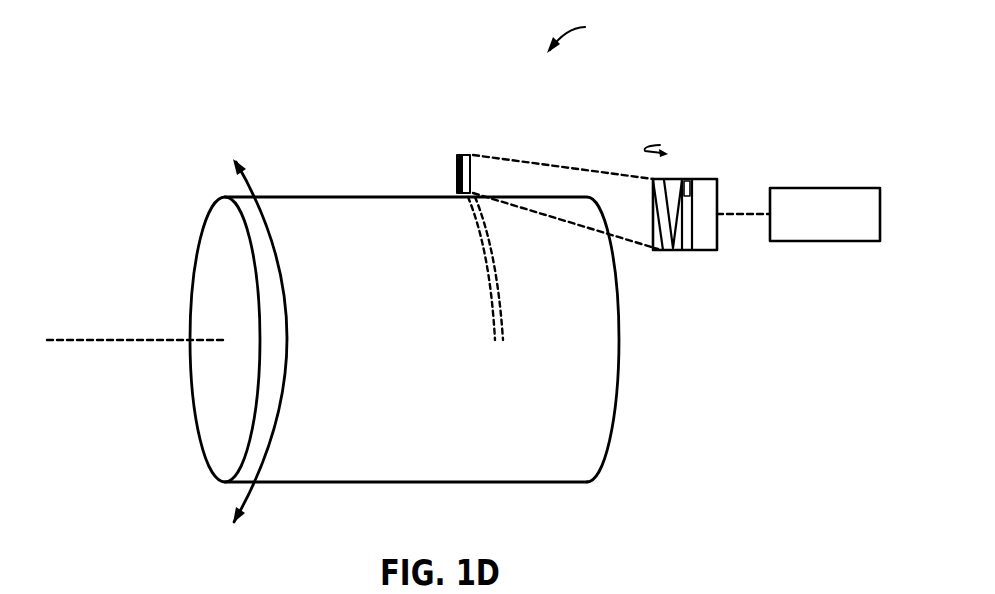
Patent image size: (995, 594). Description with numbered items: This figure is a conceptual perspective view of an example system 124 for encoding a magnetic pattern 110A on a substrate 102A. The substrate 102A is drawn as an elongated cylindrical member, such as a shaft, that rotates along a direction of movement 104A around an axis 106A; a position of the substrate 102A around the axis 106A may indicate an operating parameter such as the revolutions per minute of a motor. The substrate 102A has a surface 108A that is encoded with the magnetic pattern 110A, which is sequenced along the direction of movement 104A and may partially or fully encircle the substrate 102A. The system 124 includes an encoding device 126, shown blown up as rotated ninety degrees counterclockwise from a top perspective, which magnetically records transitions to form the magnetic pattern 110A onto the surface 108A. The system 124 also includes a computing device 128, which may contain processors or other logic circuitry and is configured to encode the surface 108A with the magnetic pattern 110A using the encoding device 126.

The substrate 102A is at (404, 325).
The direction of movement 104A is at (250, 183).
The axis 106A is at (83, 340).
The surface 108A is at (333, 207).
The magnetic pattern 110A is at (493, 277).
The system 124 is at (586, 35).
The encoding device 126 is at (698, 180).
The computing device 128 is at (841, 226).